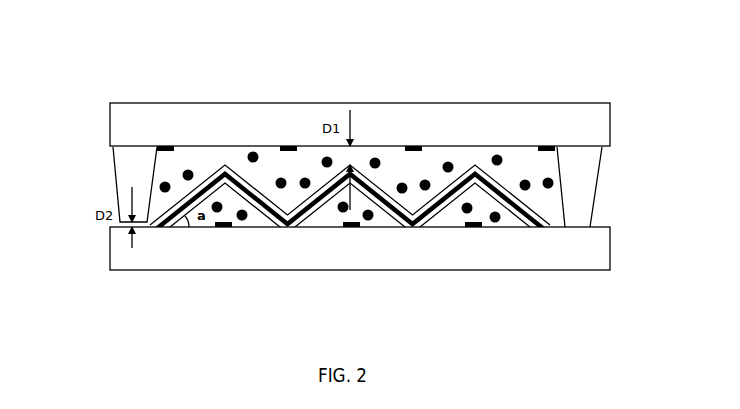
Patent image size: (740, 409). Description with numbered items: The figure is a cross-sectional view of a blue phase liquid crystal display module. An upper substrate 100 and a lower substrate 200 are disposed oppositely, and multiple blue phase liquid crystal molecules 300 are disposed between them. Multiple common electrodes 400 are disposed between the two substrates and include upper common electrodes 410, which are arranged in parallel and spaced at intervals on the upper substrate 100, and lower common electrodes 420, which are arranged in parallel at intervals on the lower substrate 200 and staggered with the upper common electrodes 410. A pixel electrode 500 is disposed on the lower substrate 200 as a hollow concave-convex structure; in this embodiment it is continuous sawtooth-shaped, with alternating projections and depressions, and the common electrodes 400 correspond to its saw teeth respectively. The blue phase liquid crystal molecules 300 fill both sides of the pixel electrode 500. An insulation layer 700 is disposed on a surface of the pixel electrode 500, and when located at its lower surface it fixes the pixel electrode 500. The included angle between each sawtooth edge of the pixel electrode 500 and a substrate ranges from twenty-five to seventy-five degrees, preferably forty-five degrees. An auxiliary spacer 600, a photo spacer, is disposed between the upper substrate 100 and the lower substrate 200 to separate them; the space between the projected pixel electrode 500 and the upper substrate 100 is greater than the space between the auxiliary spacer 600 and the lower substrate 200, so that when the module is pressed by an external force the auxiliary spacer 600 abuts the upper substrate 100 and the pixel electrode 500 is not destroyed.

The upper substrate 100 is at (252, 113).
The lower substrate 200 is at (537, 267).
The blue phase liquid crystal molecules 300 is at (433, 157).
The common electrodes 400 is at (381, 155).
The upper common electrodes 410 is at (413, 146).
The lower common electrodes 420 is at (223, 230).
The pixel electrode 500 is at (399, 212).
The auxiliary spacer 600 is at (132, 180).
The insulation layer 700 is at (323, 209).